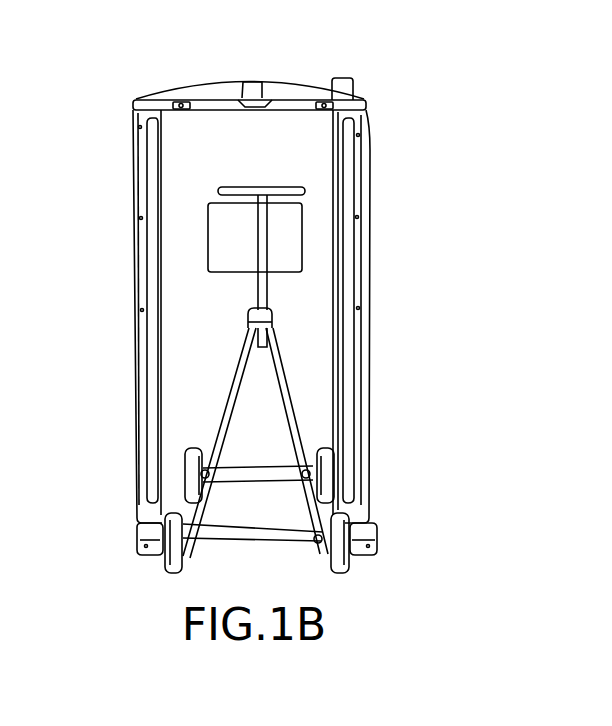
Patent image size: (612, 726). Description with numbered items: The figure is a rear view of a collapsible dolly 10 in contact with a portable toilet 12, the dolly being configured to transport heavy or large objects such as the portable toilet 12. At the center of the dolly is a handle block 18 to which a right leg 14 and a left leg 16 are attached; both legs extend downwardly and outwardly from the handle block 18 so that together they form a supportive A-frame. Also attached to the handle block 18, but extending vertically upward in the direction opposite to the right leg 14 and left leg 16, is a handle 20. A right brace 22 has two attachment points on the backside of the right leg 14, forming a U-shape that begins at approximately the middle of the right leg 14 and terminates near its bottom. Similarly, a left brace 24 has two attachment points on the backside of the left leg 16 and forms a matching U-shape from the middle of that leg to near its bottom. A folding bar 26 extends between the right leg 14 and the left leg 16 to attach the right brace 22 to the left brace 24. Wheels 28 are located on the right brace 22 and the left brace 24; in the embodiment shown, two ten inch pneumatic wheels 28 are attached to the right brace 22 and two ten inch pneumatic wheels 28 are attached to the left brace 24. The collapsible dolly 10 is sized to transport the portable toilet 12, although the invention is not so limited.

The collapsible dolly 10 is at (312, 272).
The portable toilet 12 is at (265, 157).
The right leg 14 is at (290, 410).
The left leg 16 is at (228, 383).
The handle block 18 is at (272, 316).
The handle 20 is at (258, 243).
The right brace 22 is at (358, 513).
The left brace 24 is at (147, 515).
The folding bar 26 is at (232, 470).
The wheels 28 is at (187, 450).